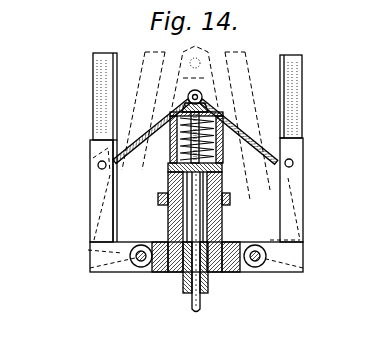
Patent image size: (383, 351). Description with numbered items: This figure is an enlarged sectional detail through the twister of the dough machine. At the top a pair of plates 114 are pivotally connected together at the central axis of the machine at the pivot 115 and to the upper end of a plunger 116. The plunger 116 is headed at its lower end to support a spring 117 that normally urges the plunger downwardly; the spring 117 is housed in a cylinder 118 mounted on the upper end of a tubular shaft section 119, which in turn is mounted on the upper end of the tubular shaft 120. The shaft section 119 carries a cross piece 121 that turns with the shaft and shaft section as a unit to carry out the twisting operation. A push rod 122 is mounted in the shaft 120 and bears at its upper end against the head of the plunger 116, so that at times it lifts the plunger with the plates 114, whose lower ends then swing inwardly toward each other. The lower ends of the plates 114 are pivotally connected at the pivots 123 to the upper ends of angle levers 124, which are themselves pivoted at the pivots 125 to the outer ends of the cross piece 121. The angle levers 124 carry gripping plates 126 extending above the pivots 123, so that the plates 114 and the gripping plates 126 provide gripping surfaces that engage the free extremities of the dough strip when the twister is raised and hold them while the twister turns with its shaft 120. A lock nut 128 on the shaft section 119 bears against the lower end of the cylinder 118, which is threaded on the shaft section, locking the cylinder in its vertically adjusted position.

The plates 114 is at (121, 131).
The pivot 115 is at (201, 92).
The plunger 116 is at (208, 102).
The spring 117 is at (205, 118).
The cylinder 118 is at (278, 136).
The tubular shaft section 119 is at (175, 223).
The tubular shaft 120 is at (182, 290).
The cross piece 121 is at (170, 268).
The push rod 122 is at (195, 313).
The pivots 123 is at (99, 168).
The angle levers 124 is at (100, 208).
The pivots 125 is at (145, 256).
The gripping plates 126 is at (98, 96).
The lock nut 128 is at (218, 207).